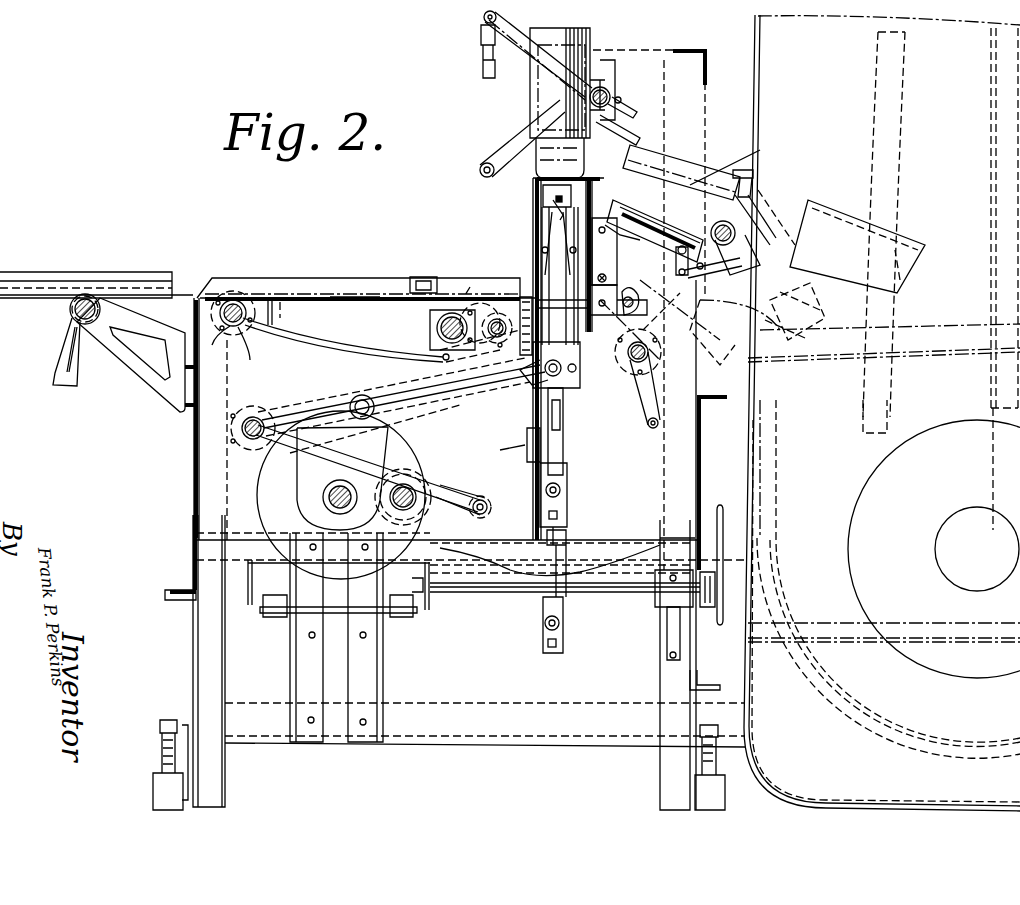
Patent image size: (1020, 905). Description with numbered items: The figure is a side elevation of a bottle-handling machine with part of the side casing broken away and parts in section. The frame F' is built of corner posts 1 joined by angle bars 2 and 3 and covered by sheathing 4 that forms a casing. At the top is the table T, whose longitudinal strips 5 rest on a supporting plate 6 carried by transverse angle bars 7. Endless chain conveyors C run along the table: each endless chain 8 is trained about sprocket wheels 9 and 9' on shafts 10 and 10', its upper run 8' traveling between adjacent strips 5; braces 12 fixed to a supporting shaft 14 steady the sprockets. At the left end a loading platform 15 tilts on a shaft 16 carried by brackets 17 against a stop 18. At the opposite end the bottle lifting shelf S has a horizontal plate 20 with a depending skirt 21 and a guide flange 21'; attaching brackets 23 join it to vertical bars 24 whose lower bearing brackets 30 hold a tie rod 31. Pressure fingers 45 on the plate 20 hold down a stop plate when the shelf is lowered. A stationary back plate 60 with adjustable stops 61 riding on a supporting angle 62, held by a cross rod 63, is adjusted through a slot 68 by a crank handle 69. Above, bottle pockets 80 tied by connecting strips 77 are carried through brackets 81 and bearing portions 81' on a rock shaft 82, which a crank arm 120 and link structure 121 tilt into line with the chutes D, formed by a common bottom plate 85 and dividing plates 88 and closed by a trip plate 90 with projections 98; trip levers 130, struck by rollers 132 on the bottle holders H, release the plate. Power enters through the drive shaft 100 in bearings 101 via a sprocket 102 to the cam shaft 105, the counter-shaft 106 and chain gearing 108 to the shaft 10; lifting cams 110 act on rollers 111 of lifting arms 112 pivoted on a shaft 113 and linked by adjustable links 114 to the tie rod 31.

The corner posts 1 is at (203, 612).
The angle bars 2 is at (250, 727).
The angle bars 3 is at (700, 675).
The sheathing 4 is at (192, 447).
The strips 5 is at (272, 293).
The supporting plate 6 is at (380, 300).
The transverse angle bars 7 is at (276, 322).
The endless chain 8 is at (343, 340).
The upper run 8' is at (476, 278).
The driving sprockets 9 is at (455, 346).
The sprocket wheels 9' is at (255, 346).
The driving shaft 10 is at (497, 302).
The shaft 10' is at (246, 286).
The auxiliary supports or braces 12 is at (458, 318).
The fixed supporting shaft 14 is at (440, 324).
The loading platform 15 is at (108, 282).
The shaft 16 is at (85, 296).
The brackets 17 is at (130, 362).
The stop 18 is at (58, 388).
The horizontal plate 20 is at (536, 210).
The skirt 21 is at (517, 211).
The guide 21' is at (514, 445).
The attaching brackets 23 is at (562, 198).
The vertical bars 24 is at (575, 382).
The bearing brackets 30 is at (558, 515).
The tie rod 31 is at (560, 490).
The pressure fingers 45 is at (526, 297).
The back plate 60 is at (606, 262).
The adjustable stops 61 is at (618, 318).
The supporting angle 62 is at (628, 365).
The cross rod 63 is at (607, 278).
The slot 68 is at (688, 275).
The crank handle 69 is at (655, 395).
The connecting strips 77 is at (600, 90).
The bottle pockets 80 is at (590, 42).
The brackets 81 is at (663, 297).
The bearing portions 81' is at (647, 116).
The rock shaft 82 is at (608, 92).
The common bottom plate 85 is at (619, 251).
The vertical dividing plates 88 is at (680, 135).
The trip plate 90 is at (760, 200).
The projections 98 is at (752, 178).
The drive shaft 100 is at (488, 592).
The bearings 101 is at (655, 560).
The sprocket 102 is at (716, 622).
The cam shaft 105 is at (330, 500).
The counter-shaft 106 is at (420, 497).
The chain and sprocket gearing 108 is at (520, 330).
The bottle shelf lifting cams 110 is at (410, 432).
The rollers 111 is at (362, 395).
The lifting arms 112 is at (495, 415).
The shaft 113 is at (253, 416).
The adjustable link 114 is at (567, 455).
The crank arm 120 is at (510, 40).
The link structure 121 is at (486, 78).
The trip lever 130 is at (735, 228).
The rollers or pins 132 is at (790, 272).
The endless chain conveyors C is at (257, 351).
The inclined chutes or slides D is at (712, 185).
The frame F' is at (173, 495).
The bottle holders H is at (908, 240).
The bottle lifting shelf S is at (548, 280).
The table T is at (355, 286).